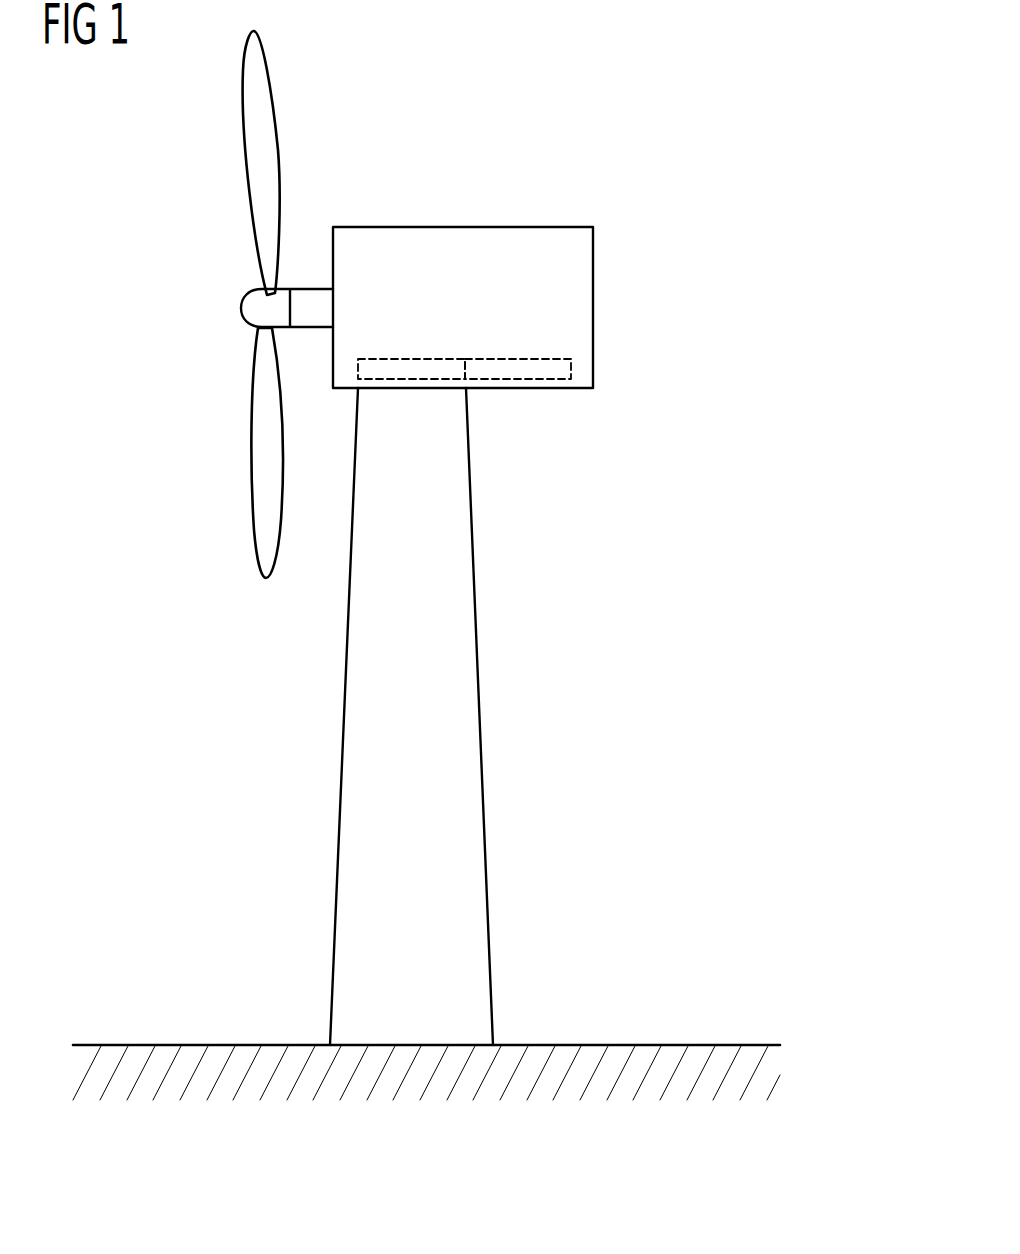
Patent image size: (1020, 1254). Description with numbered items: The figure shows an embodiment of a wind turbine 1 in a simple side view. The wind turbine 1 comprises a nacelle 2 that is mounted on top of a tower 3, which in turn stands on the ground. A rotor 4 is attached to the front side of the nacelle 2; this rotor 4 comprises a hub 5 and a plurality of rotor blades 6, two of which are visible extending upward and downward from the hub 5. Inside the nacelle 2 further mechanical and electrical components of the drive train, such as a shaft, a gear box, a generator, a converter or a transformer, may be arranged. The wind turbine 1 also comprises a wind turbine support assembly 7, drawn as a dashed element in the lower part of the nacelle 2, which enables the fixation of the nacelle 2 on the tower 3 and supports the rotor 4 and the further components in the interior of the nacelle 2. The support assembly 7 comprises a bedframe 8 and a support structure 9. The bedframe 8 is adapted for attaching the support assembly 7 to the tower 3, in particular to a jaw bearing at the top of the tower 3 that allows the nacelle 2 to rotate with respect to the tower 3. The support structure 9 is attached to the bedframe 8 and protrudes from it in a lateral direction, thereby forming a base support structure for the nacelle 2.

The wind turbine 1 is at (583, 186).
The nacelle 2 is at (398, 227).
The tower 3 is at (447, 687).
The rotor 4 is at (210, 264).
The hub 5 is at (257, 310).
The rotor blades 6 is at (257, 112).
The wind turbine support assembly 7 is at (548, 359).
The bedframe 8 is at (437, 368).
The support structure 9 is at (519, 368).